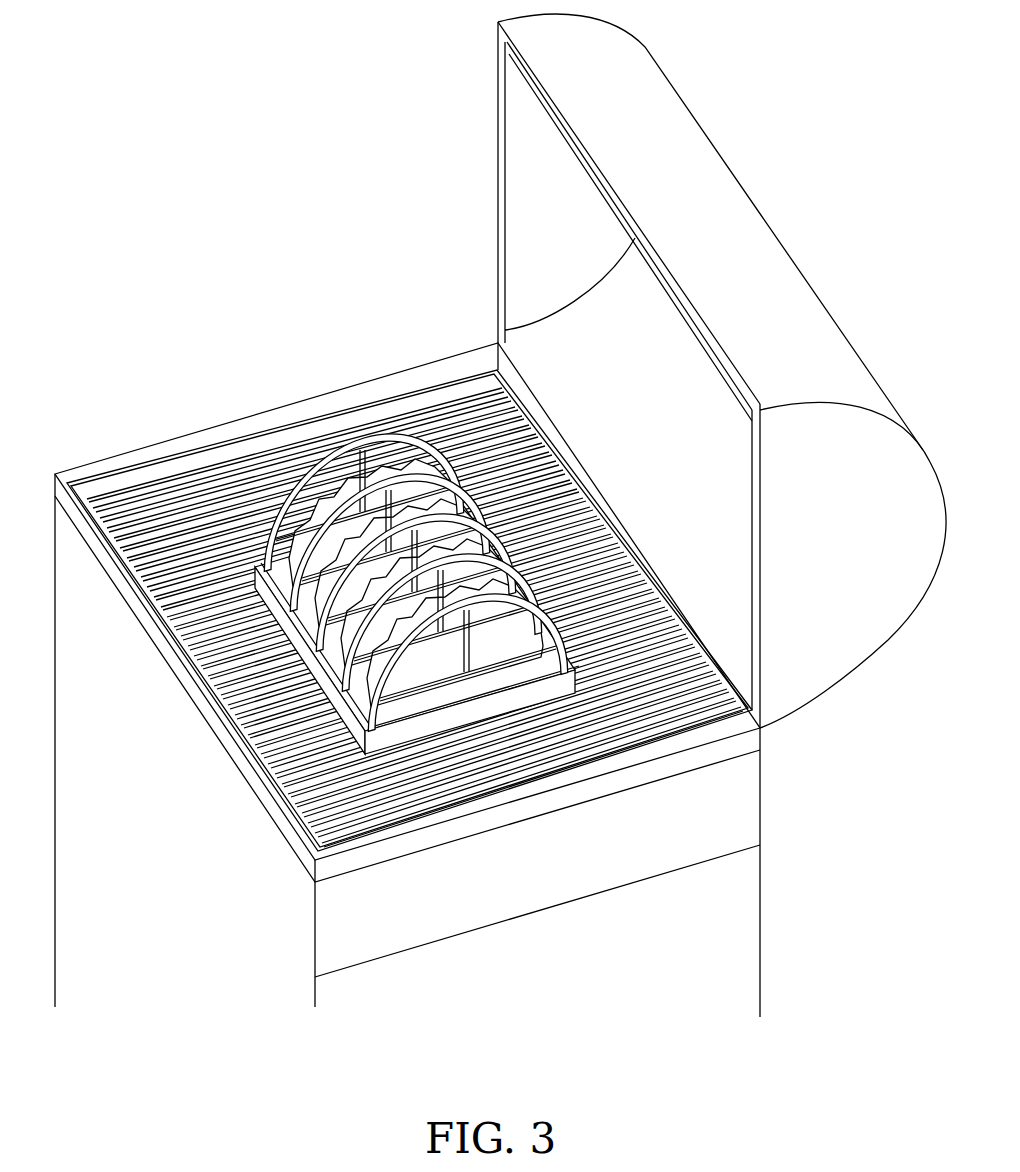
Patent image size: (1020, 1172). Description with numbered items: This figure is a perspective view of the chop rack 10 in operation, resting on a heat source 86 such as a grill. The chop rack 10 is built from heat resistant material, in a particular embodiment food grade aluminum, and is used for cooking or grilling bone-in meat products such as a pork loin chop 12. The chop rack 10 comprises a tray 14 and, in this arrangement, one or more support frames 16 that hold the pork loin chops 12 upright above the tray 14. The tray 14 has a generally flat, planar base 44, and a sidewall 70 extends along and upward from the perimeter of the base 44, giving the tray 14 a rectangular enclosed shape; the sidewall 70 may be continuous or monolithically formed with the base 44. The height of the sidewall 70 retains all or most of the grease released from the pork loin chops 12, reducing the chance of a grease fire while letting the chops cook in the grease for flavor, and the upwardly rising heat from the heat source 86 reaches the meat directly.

The chop rack 10 is at (267, 456).
The pork loin chop 12 is at (387, 470).
The tray 14 is at (255, 596).
The support frame 16 is at (250, 550).
The base 44 is at (340, 643).
The sidewall 70 is at (342, 708).
The heat source 86 is at (373, 793).